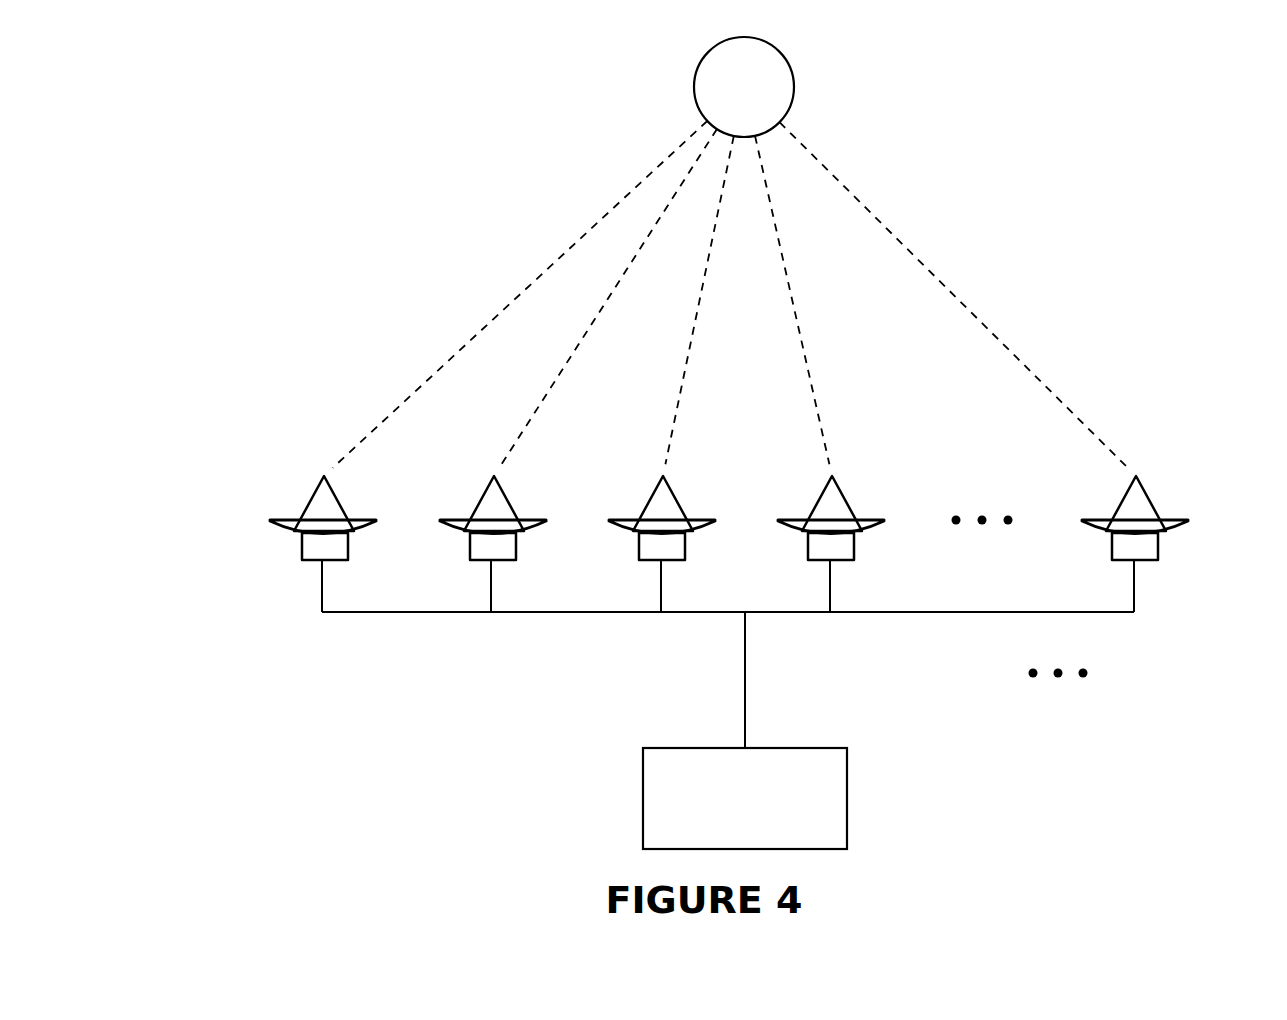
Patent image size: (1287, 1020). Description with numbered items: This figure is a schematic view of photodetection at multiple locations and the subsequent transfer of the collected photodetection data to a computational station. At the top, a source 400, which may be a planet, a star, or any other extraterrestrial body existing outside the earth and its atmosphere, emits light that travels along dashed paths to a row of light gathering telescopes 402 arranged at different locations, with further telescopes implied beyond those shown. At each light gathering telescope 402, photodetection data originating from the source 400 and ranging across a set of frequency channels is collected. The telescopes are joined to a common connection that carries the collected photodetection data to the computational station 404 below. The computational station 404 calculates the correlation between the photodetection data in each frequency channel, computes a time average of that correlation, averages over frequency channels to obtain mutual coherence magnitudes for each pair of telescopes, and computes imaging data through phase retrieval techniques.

The source 400 is at (744, 87).
The light gathering telescope 402 is at (313, 562).
The computational station 404 is at (745, 798).